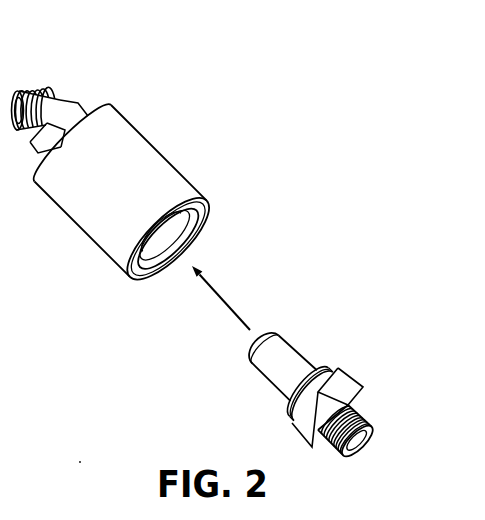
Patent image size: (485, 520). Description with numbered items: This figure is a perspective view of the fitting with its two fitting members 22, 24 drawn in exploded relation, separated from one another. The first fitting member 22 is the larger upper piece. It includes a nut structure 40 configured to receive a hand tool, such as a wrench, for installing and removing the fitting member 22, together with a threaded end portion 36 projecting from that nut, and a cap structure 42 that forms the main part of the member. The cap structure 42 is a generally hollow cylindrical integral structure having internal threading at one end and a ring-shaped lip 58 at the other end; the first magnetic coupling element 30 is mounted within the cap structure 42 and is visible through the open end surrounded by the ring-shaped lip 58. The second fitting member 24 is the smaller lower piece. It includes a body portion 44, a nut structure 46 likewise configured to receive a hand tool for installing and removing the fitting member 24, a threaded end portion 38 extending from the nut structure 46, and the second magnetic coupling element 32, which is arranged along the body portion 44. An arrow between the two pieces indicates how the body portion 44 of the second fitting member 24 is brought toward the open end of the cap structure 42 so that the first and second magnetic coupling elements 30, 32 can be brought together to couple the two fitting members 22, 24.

The first fitting member 22 is at (141, 183).
The second fitting member 24 is at (320, 378).
The first magnetic coupling element 30 is at (202, 229).
The second magnetic coupling element 32 is at (289, 417).
The threaded end portion 36 is at (57, 88).
The threaded end portion 38 is at (371, 410).
The nut structure 40 is at (72, 103).
The cap structure 42 is at (157, 146).
The body portion 44 is at (295, 345).
The nut structure 46 is at (339, 369).
The ring-shaped lip 58 is at (147, 279).